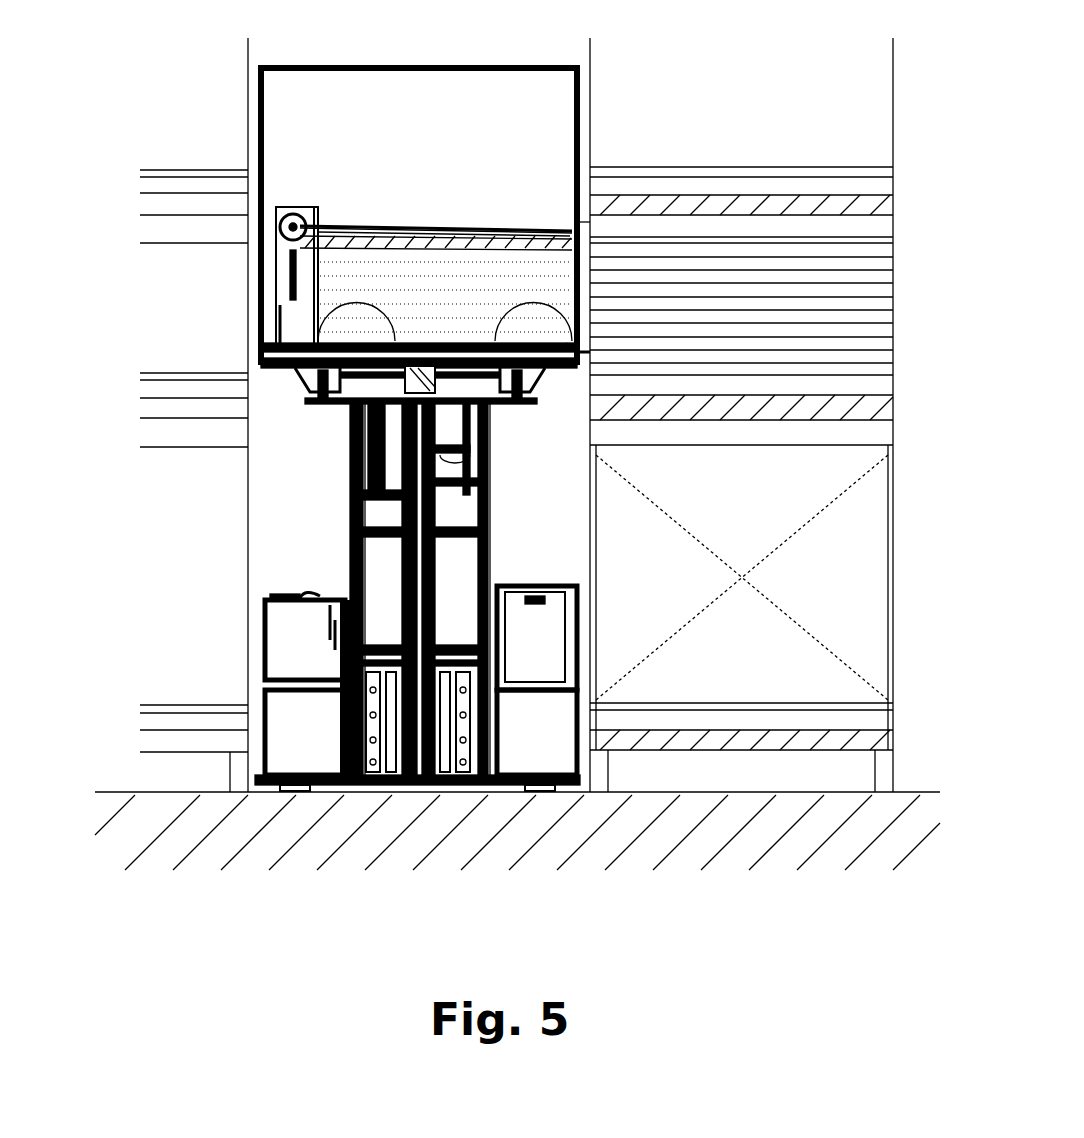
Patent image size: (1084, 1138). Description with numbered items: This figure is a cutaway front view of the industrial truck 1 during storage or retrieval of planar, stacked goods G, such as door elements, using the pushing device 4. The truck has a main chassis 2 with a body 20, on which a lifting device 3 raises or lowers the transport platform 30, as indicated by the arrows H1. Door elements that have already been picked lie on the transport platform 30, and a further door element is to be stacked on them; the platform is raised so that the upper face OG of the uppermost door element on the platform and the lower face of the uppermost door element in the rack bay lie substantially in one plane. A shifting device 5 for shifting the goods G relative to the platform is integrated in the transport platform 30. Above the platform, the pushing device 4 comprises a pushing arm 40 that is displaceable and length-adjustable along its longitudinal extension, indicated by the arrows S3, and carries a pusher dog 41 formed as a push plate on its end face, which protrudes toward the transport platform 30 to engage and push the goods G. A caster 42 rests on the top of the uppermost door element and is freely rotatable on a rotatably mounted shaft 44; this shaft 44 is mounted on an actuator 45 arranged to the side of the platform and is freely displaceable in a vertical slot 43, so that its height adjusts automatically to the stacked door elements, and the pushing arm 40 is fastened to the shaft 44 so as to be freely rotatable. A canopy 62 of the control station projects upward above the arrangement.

The industrial truck 1 is at (288, 585).
The main chassis 2 is at (531, 746).
The lifting device 3 is at (492, 542).
The pushing device 4 is at (335, 208).
The shifting device 5 is at (583, 366).
The body 20 is at (298, 748).
The transport platform 30 is at (250, 378).
The pushing arm 40 is at (388, 240).
The pusher dog 41 is at (582, 222).
The caster 42 is at (285, 228).
The vertical slot 43 is at (290, 285).
The shaft 44 is at (298, 210).
The actuator 45 is at (278, 330).
The canopy 62 is at (485, 68).
The goods G is at (452, 285).
The upper face of goods item OG is at (410, 232).
The longitudinal displacement of pushing arm S3 is at (540, 114).
The raising/lowering of transport platform H1 is at (302, 432).